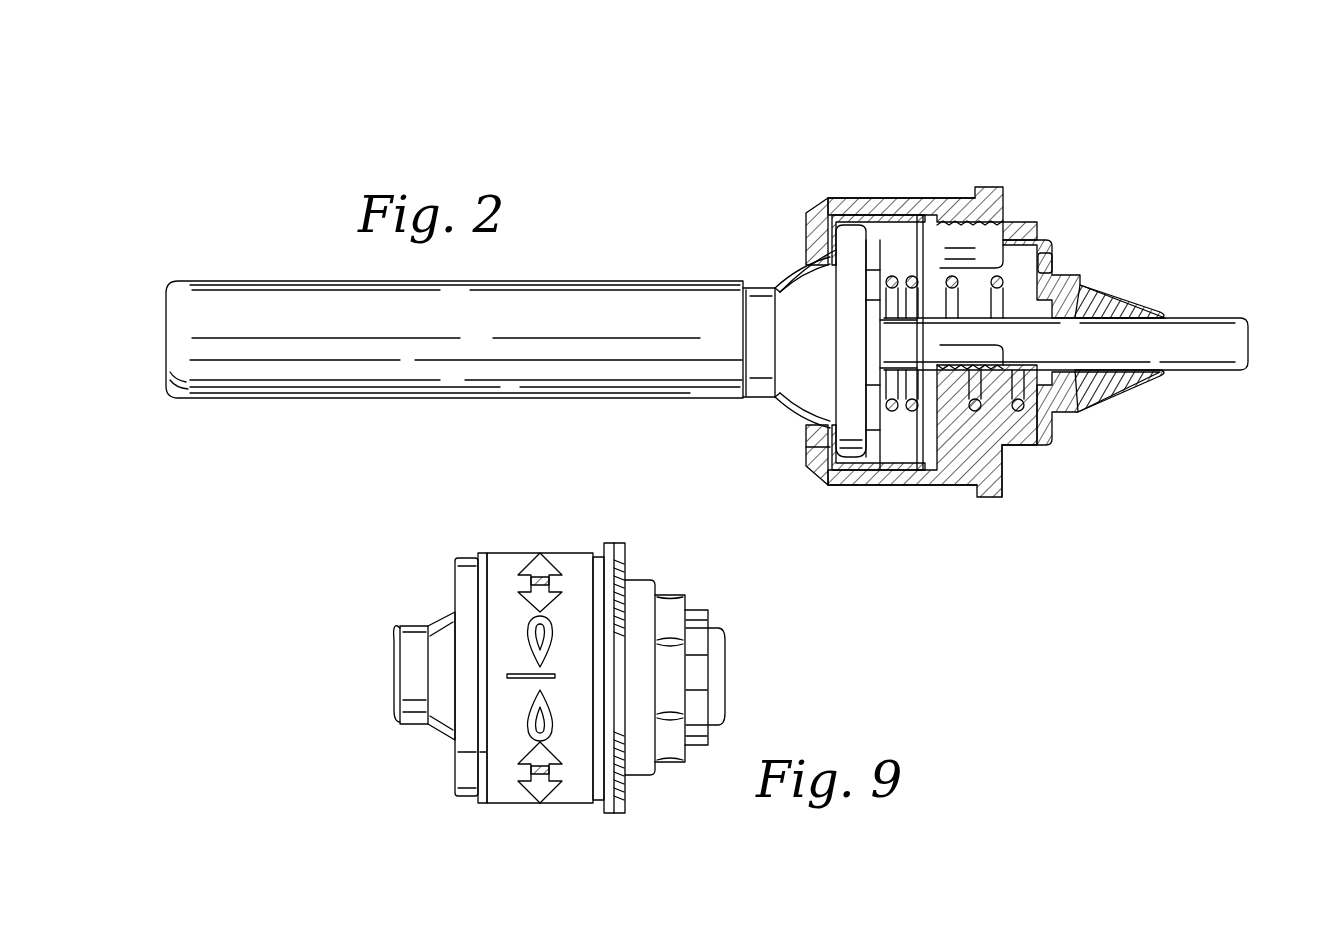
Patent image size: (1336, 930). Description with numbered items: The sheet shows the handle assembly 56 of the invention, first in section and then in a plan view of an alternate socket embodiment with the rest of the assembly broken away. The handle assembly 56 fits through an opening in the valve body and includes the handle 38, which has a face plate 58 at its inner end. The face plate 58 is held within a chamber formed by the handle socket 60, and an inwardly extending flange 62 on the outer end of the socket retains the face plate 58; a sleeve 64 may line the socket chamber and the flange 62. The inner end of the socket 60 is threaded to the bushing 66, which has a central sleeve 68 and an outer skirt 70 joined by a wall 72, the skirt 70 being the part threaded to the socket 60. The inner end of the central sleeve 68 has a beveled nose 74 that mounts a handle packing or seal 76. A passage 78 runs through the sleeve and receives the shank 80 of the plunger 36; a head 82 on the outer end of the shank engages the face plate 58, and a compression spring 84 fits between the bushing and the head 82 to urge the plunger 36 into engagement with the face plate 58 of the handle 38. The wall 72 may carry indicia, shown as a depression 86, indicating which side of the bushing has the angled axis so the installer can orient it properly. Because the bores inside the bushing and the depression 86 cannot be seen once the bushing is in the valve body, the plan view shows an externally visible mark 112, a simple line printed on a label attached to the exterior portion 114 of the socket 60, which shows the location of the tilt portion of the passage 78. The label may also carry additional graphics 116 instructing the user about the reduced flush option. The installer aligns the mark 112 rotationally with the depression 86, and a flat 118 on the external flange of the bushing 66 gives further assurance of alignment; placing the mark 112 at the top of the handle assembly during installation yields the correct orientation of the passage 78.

In FIG. 2, the plunger 36 is at (1205, 312).
In FIG. 2, the handle 38 is at (270, 383).
In FIG. 9, the handle 38 is at (412, 708).
In FIG. 2, the handle assembly 56 is at (785, 205).
In FIG. 2, the face plate 58 is at (850, 272).
In FIG. 2, the handle socket 60 is at (833, 486).
In FIG. 9, the handle socket 60 is at (465, 765).
In FIG. 2, the inwardly extending flange 62 is at (806, 447).
In FIG. 2, the sleeve 64 is at (892, 440).
In FIG. 2, the bushing 66 is at (1058, 230).
In FIG. 9, the bushing 66 is at (662, 780).
In FIG. 2, the central sleeve 68 is at (1000, 425).
In FIG. 2, the outer skirt 70 is at (972, 200).
In FIG. 2, the wall 72 is at (1040, 428).
In FIG. 2, the beveled nose 74 is at (1118, 395).
In FIG. 2, the handle packing or seal 76 is at (1132, 310).
In FIG. 2, the passage 78 is at (964, 395).
In FIG. 2, the shank 80 is at (1248, 320).
In FIG. 2, the head 82 is at (893, 275).
In FIG. 2, the compression spring 84 is at (975, 232).
In FIG. 2, the depression 86 is at (1052, 262).
In FIG. 9, the mark 112 is at (520, 675).
In FIG. 9, the exterior portion 114 is at (578, 790).
In FIG. 9, the additional graphics 116 is at (530, 630).
In FIG. 9, the flat 118 is at (620, 675).